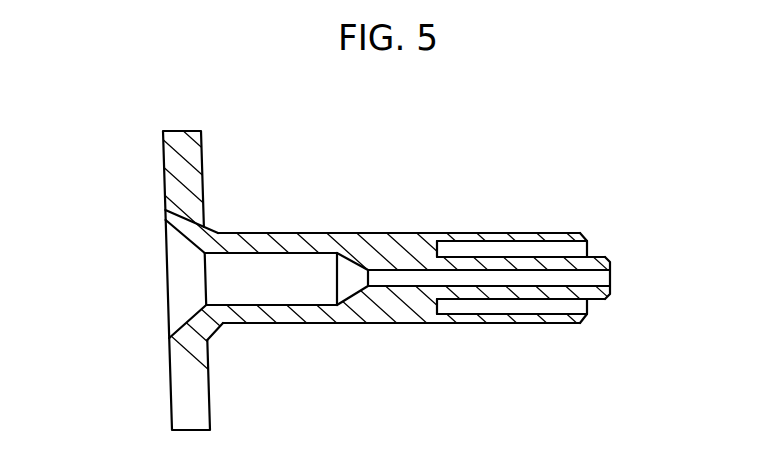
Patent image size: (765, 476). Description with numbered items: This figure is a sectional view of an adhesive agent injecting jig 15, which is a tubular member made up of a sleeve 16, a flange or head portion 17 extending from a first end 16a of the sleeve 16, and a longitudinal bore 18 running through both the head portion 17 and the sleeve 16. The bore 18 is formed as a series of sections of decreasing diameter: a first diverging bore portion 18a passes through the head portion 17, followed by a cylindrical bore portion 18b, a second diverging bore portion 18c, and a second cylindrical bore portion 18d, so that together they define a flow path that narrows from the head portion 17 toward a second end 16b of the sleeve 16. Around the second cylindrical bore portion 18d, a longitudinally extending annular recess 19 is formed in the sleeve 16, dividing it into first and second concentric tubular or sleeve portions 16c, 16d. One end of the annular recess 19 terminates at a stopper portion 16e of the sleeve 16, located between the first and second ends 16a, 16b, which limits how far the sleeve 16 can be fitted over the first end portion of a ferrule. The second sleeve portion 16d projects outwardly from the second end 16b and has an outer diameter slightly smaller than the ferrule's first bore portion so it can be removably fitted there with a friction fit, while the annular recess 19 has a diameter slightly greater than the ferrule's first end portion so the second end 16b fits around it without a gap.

The adhesive agent injecting jig 15 is at (298, 218).
The sleeve 16 is at (385, 237).
The first end of the sleeve 16a is at (218, 232).
The second end of the sleeve 16b is at (587, 238).
The first concentric sleeve portion 16c is at (538, 236).
The second concentric sleeve portion 16d is at (520, 292).
The stopper portion 16e is at (440, 248).
The flange or head portion 17 is at (183, 131).
The longitudinal bore 18 is at (167, 267).
The first diverging bore portion 18a is at (182, 305).
The cylindrical bore portion 18b is at (272, 288).
The second diverging bore portion 18c is at (352, 292).
The second cylindrical bore portion 18d is at (417, 279).
The longitudinally extending annular recess 19 is at (553, 302).